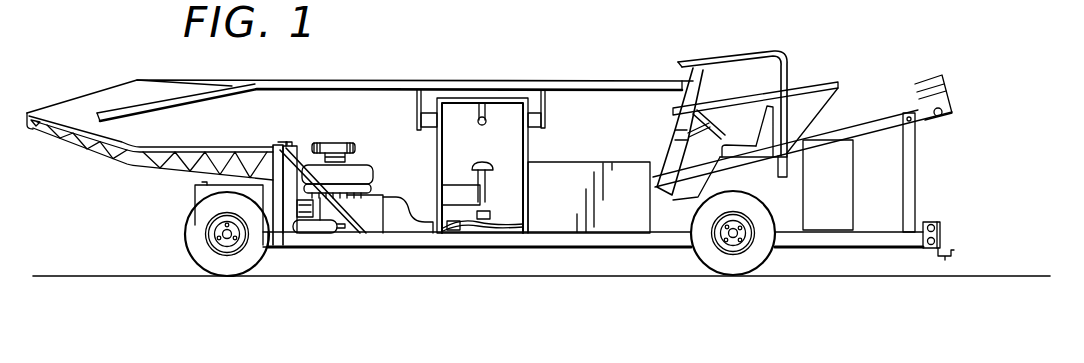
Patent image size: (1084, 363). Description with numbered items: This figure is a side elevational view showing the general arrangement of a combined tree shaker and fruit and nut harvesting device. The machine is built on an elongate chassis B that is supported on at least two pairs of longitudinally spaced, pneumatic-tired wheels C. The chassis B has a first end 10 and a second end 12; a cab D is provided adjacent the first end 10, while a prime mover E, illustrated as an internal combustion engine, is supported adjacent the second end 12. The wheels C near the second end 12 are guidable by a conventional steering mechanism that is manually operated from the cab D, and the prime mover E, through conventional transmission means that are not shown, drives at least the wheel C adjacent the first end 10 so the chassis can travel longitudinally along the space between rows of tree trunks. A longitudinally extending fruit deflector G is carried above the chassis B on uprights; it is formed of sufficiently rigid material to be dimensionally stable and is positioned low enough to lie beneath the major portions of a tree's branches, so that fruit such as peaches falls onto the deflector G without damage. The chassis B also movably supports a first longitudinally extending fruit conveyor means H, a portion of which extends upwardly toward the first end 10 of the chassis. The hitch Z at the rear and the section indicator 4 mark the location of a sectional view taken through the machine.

The chassis B is at (577, 242).
The pneumatic-tired wheels C is at (216, 268).
The cab D is at (750, 55).
The prime mover E is at (377, 187).
The fruit deflector G is at (560, 81).
The fruit conveyor means H is at (873, 120).
The hitch Z is at (950, 250).
The first end 10 is at (873, 237).
The second end 12 is at (283, 240).
The section line 4- 4 is at (412, 132).